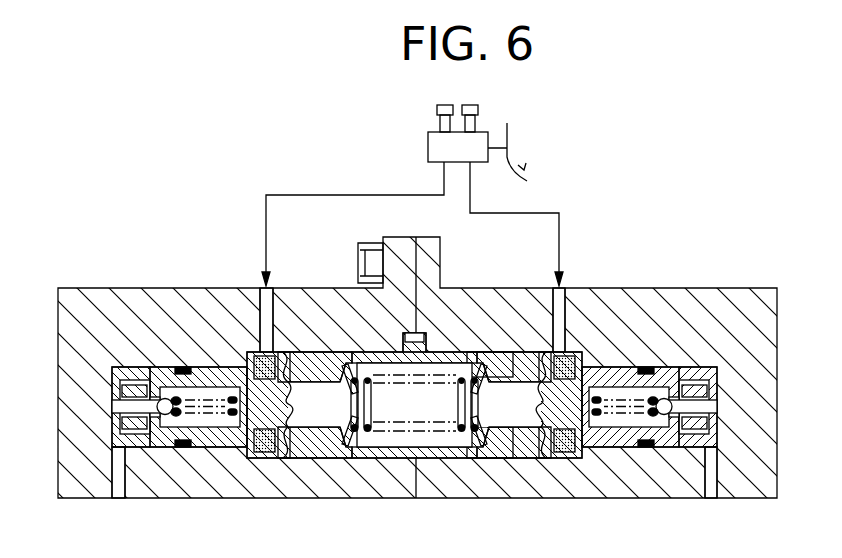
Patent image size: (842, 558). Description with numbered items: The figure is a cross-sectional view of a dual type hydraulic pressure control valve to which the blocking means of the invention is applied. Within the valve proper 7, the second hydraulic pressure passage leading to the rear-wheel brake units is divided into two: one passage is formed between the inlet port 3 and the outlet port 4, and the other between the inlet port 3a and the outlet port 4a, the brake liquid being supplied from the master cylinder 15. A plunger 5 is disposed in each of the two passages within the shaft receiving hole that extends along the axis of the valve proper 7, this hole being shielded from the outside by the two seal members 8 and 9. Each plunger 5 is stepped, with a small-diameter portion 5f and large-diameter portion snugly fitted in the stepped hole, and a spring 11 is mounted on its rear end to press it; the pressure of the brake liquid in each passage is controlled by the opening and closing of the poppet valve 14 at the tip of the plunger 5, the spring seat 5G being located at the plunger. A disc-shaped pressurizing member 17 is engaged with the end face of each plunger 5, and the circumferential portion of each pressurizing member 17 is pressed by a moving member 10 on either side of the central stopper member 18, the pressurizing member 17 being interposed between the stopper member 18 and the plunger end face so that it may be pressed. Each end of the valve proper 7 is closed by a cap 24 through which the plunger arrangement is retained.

The inlet port 3 is at (566, 290).
The inlet port 3a is at (259, 289).
The outlet port 4 is at (711, 491).
The outlet port 4a is at (119, 493).
The plunger 5 is at (300, 412).
The sleeve 5f is at (663, 442).
The spring seat 5G is at (365, 434).
The valve proper 7 is at (641, 292).
The seal member 8 is at (518, 356).
The seal member 9 is at (292, 356).
The moving member 10 is at (322, 363).
The spring 11 is at (452, 353).
The poppet valve 14 is at (158, 416).
The master cylinder 15 is at (484, 137).
The pressurizing member 17 is at (338, 437).
The stopper member 18 is at (415, 453).
The cap 24 is at (157, 368).